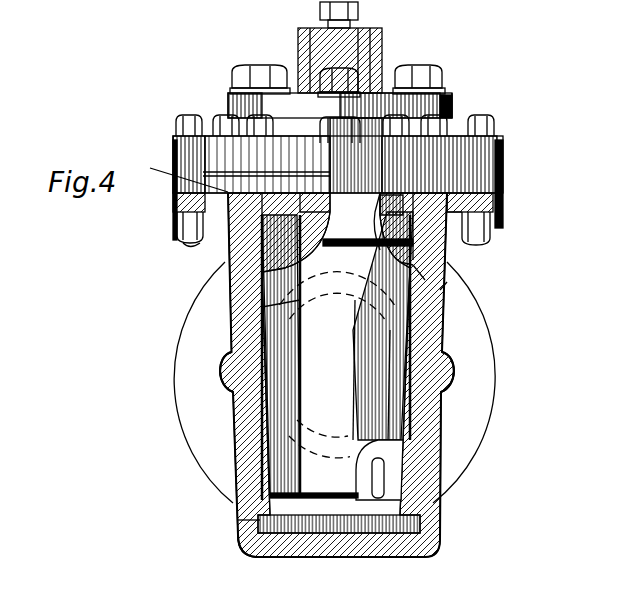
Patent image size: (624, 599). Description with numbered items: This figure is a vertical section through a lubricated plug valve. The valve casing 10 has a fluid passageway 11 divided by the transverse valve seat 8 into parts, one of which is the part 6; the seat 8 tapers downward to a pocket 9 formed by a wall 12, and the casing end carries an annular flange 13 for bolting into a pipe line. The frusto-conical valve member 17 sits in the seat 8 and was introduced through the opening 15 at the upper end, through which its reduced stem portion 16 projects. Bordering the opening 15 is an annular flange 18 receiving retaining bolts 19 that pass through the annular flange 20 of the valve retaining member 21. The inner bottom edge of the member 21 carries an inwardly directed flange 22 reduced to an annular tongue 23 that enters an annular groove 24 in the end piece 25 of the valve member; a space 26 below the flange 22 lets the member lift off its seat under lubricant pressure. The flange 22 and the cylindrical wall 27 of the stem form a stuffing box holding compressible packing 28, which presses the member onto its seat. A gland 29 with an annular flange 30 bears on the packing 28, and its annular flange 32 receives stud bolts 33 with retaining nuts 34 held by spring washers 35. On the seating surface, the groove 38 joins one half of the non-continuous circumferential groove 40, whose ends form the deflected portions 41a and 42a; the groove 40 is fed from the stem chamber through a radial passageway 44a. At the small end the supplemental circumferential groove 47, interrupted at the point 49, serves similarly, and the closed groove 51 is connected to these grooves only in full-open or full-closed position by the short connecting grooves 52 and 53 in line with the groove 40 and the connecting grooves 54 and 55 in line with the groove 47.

The fluid passageway part 6 is at (262, 307).
The transverse valve seat 8 is at (270, 350).
The pocket 9 is at (248, 545).
The valve casing 10 is at (440, 353).
The fluid passageway 11 is at (247, 452).
The wall 12 is at (413, 553).
The annular flange 13 is at (487, 340).
The opening 15 is at (207, 175).
The reduced stem portion 16 is at (330, 200).
The valve member 17 is at (357, 357).
The annular flange 18 is at (173, 202).
The retaining bolts 19 is at (180, 217).
The annular flange 20 is at (505, 147).
The valve retaining member 21 is at (255, 215).
The annular inwardly directed flange 22 is at (403, 205).
The annular tongue 23 is at (232, 238).
The annular groove 24 is at (455, 218).
The end piece 25 is at (397, 192).
The space 26 is at (497, 207).
The cylindrical wall 27 is at (267, 117).
The compressible packing 28 is at (192, 246).
The gland 29 is at (452, 102).
The annular flange 30 is at (447, 93).
The annular flange 32 is at (292, 100).
The stud bolts 33 is at (270, 65).
The retaining nuts 34 is at (243, 72).
The spring washers 35 is at (242, 90).
The groove 38 is at (390, 397).
The circumferential groove 40 is at (337, 246).
The deflected portion 41a is at (364, 238).
The deflected portion 42a is at (447, 282).
The radial passageway 44a is at (440, 270).
The supplemental circumferential groove 47 is at (350, 495).
The interruption 49 is at (357, 520).
The closed groove 51 is at (290, 395).
The connecting groove 52 is at (222, 263).
The connecting groove 53 is at (440, 295).
The connecting groove 54 is at (378, 480).
The connecting groove 55 is at (247, 502).